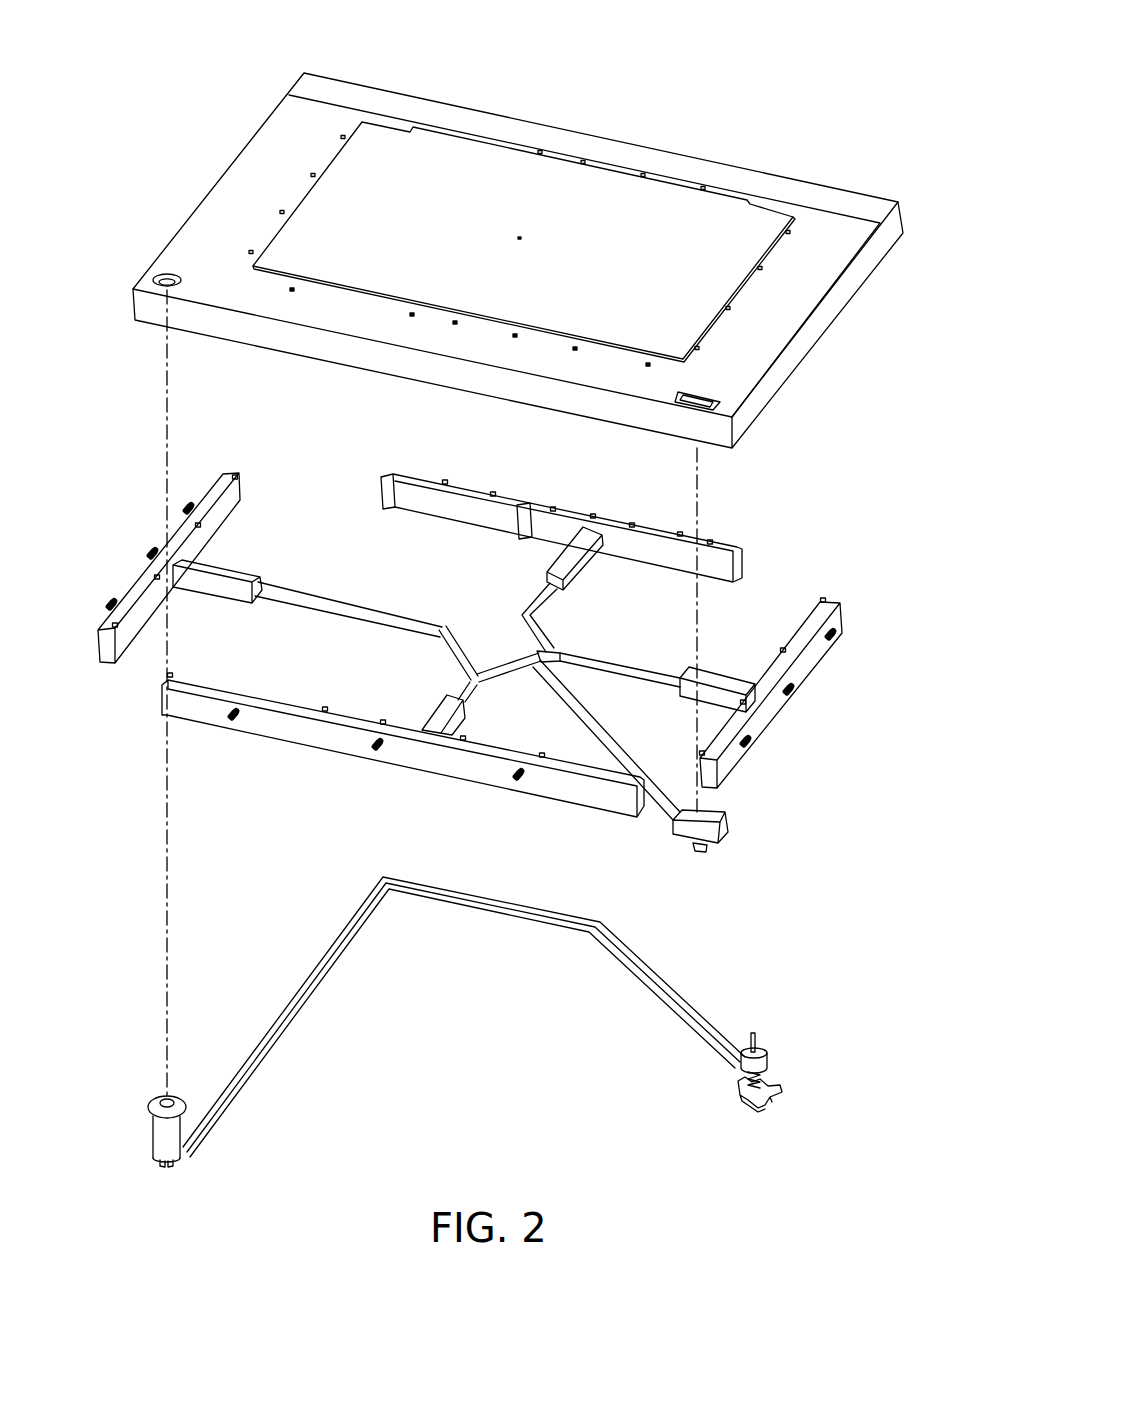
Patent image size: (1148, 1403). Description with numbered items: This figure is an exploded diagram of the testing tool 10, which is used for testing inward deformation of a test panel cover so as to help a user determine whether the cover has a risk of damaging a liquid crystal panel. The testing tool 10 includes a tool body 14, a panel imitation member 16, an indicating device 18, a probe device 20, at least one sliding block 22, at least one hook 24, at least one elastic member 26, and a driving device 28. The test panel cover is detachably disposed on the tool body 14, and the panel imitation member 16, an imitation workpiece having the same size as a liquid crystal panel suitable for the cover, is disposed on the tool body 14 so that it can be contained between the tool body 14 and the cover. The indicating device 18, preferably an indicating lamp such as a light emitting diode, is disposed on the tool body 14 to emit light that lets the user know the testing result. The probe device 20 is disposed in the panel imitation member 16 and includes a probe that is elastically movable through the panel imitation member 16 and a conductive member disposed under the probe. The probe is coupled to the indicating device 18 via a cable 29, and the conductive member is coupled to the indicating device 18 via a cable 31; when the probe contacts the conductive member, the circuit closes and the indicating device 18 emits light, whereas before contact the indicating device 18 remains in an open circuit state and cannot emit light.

The testing tool 10 is at (762, 67).
The tool body 14 is at (828, 191).
The panel imitation member 16 is at (607, 175).
The indicating device 18 is at (162, 1138).
The probe device 20 is at (770, 1042).
The sliding block 22 is at (832, 602).
The hook 24 is at (821, 598).
The elastic member 26 is at (835, 640).
The driving device 28 is at (608, 651).
The cable 29 is at (670, 978).
The cable 31 is at (665, 1012).